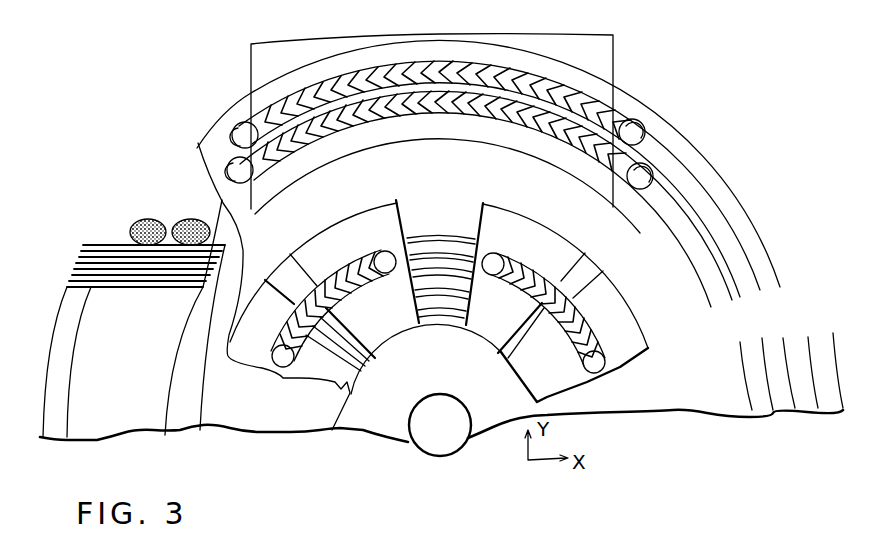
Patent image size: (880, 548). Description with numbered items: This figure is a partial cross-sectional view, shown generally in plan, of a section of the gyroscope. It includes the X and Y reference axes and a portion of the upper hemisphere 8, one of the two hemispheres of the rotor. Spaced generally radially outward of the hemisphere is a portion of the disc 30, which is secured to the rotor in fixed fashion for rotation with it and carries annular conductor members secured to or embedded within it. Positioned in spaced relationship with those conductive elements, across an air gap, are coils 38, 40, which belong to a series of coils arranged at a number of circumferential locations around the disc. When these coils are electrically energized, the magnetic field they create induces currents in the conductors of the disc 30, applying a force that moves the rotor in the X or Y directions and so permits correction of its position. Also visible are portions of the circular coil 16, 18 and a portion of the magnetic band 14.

The upper hemisphere 8 is at (445, 263).
The magnetic band 14 is at (598, 343).
The circular coil 16 is at (624, 177).
The circular coil 18 is at (646, 126).
The disc member 30 is at (726, 188).
The coil 38 is at (195, 201).
The coil 40 is at (150, 220).